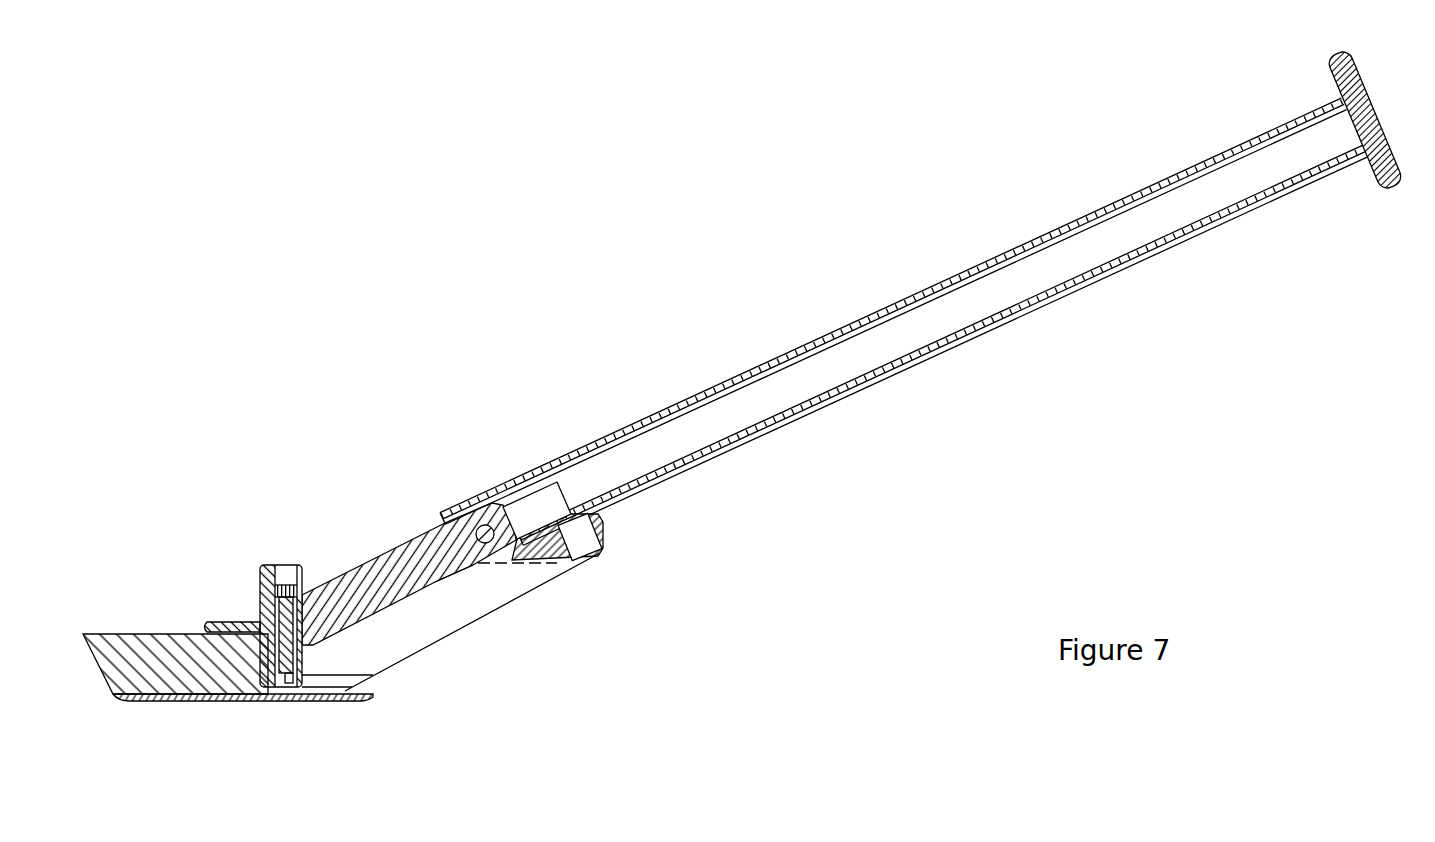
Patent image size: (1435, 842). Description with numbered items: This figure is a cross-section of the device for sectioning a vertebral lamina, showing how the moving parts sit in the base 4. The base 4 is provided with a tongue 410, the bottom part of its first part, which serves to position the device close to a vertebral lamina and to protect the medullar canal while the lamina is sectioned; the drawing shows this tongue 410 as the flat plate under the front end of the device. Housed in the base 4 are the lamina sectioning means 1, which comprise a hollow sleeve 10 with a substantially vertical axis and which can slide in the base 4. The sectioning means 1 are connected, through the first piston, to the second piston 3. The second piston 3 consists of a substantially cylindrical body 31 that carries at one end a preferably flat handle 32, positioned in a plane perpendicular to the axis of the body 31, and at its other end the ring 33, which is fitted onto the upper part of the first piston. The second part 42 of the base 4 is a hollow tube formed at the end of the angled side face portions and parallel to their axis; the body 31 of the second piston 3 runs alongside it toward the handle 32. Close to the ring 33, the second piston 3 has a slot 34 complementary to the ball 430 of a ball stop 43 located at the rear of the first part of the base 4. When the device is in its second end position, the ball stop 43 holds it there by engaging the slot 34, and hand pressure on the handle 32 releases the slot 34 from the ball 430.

The lamina sectioning means 1 is at (141, 622).
The second piston 3 is at (367, 545).
The base 4 is at (405, 678).
The sleeve 10 is at (283, 572).
The cylindrical body 31 is at (588, 480).
The handle 32 is at (1370, 108).
The ring 33 is at (262, 612).
The slot 34 is at (437, 583).
The second part of the base 42 is at (1037, 243).
The ball stop 43 is at (581, 538).
The tongue 410 is at (237, 700).
The ball 430 is at (572, 517).